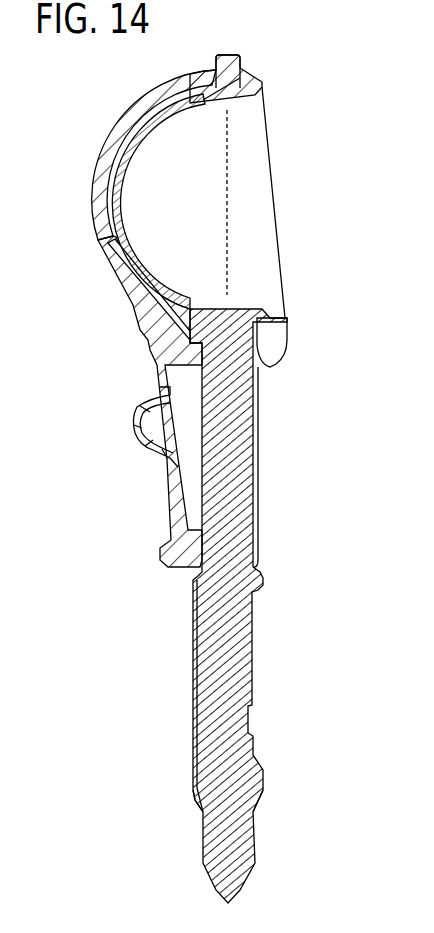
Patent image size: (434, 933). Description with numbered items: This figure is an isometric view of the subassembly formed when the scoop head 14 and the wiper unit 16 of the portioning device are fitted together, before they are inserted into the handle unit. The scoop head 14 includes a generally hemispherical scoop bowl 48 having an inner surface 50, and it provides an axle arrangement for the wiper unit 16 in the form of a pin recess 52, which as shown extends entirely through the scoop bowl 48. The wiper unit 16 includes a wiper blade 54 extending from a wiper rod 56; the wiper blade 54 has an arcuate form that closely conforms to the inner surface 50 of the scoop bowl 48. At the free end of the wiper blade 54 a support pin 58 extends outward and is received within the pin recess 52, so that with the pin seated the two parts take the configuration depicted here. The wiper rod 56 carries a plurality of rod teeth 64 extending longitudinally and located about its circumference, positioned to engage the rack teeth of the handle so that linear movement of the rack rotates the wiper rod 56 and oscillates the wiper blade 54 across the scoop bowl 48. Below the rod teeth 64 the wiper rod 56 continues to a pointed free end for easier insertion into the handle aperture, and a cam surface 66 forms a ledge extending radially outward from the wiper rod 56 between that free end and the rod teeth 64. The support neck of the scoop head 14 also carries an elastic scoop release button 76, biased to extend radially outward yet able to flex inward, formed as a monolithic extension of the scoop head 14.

The scoop head 14 is at (124, 318).
The scoop bowl 48 is at (98, 250).
The wiper blade 54 is at (142, 142).
The inner surface 50 is at (193, 222).
The pin recess 52 is at (250, 75).
The support pin 58 is at (228, 58).
The wiper unit 16 is at (240, 642).
The wiper rod 56 is at (237, 453).
The rod teeth 64 is at (195, 690).
The cam surface 66 is at (197, 805).
The scoop release button 76 is at (135, 420).